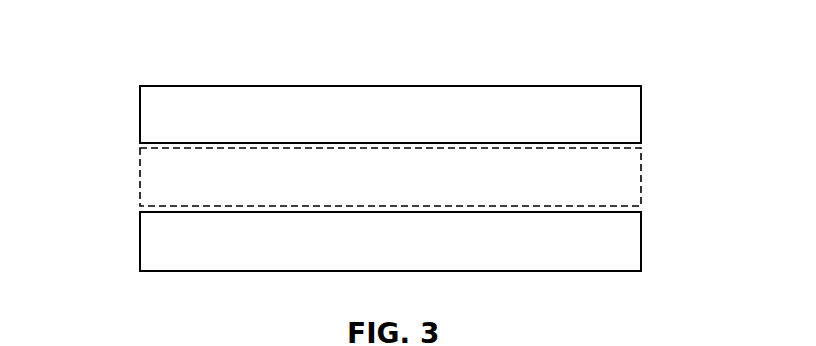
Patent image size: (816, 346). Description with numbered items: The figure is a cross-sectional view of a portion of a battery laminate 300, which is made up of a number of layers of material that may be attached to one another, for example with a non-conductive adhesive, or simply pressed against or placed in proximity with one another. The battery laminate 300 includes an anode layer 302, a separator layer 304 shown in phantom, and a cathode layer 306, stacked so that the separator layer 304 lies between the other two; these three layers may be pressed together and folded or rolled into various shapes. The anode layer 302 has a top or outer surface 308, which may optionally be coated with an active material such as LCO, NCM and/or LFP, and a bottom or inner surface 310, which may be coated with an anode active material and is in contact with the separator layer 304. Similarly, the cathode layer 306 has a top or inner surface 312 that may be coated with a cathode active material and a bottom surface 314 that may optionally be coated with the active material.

The battery laminate 300 is at (133, 50).
The anode layer 302 is at (414, 127).
The separator layer 304 is at (414, 191).
The cathode layer 306 is at (414, 254).
The top surface 308 is at (567, 86).
The bottom surface 310 is at (140, 144).
The top surface 312 is at (641, 211).
The bottom surface 314 is at (213, 271).